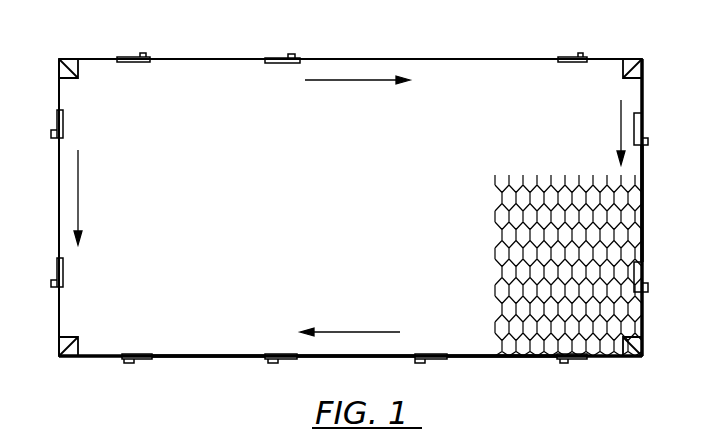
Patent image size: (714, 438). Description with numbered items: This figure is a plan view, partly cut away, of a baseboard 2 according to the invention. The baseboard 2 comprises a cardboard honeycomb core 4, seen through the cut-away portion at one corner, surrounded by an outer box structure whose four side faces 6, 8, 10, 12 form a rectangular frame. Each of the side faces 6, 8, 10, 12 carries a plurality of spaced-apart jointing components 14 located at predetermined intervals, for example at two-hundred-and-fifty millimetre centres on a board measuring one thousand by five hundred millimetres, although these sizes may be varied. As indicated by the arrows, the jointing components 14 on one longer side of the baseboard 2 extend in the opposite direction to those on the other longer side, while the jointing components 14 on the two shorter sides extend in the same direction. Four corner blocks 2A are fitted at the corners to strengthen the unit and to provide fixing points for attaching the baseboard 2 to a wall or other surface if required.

The baseboard 2 is at (50, 219).
The corner block 2A is at (69, 64).
The cardboard honeycomb core 4 is at (598, 258).
The side face 6 is at (358, 60).
The side face 8 is at (475, 357).
The side face 10 is at (636, 198).
The side face 12 is at (59, 190).
The jointing component 14 is at (290, 48).